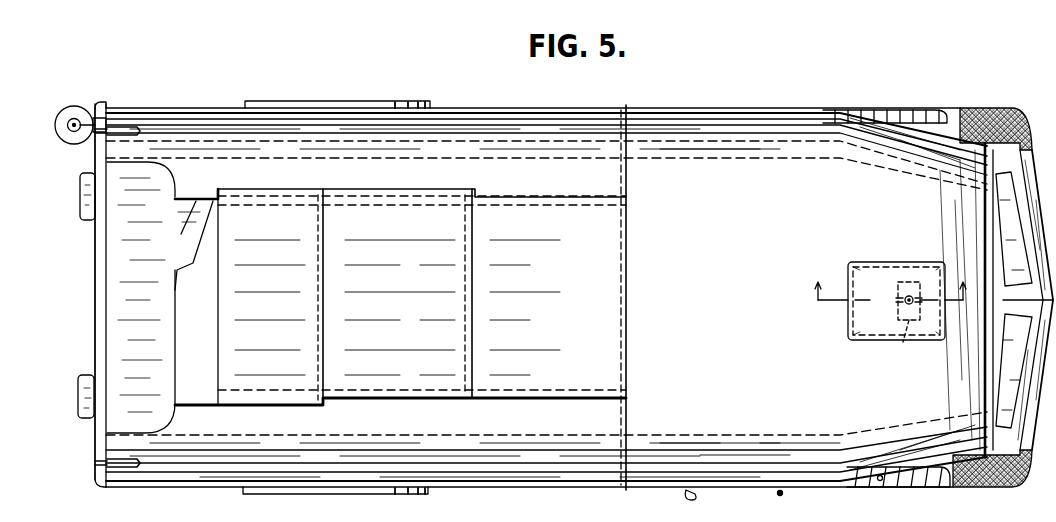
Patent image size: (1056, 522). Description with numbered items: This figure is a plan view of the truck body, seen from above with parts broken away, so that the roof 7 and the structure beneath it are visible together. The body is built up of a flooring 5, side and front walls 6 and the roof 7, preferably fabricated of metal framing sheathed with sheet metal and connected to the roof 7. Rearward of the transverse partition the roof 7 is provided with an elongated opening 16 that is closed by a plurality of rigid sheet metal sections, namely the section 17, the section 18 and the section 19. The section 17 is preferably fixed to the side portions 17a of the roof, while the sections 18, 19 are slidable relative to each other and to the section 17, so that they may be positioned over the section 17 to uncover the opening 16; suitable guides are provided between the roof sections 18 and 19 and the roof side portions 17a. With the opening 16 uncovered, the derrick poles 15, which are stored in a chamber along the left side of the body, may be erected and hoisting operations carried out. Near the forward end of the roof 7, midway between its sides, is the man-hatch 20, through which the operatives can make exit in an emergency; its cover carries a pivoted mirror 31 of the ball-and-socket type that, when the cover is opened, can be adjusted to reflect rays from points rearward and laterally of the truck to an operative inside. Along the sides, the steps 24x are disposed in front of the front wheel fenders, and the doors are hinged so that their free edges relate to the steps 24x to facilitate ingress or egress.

The flooring 5 is at (115, 347).
The side and front walls 6 is at (890, 283).
The roof 7 is at (730, 297).
The derrick poles 15 is at (95, 142).
The elongated opening 16 is at (192, 239).
The roof section 17 is at (538, 210).
The side portions of the roof 17a is at (586, 203).
The roof section 18 is at (455, 253).
The roof section 19 is at (303, 269).
The man-hatch 20 is at (887, 274).
The steps 24x is at (999, 110).
The mirror 31 is at (902, 346).